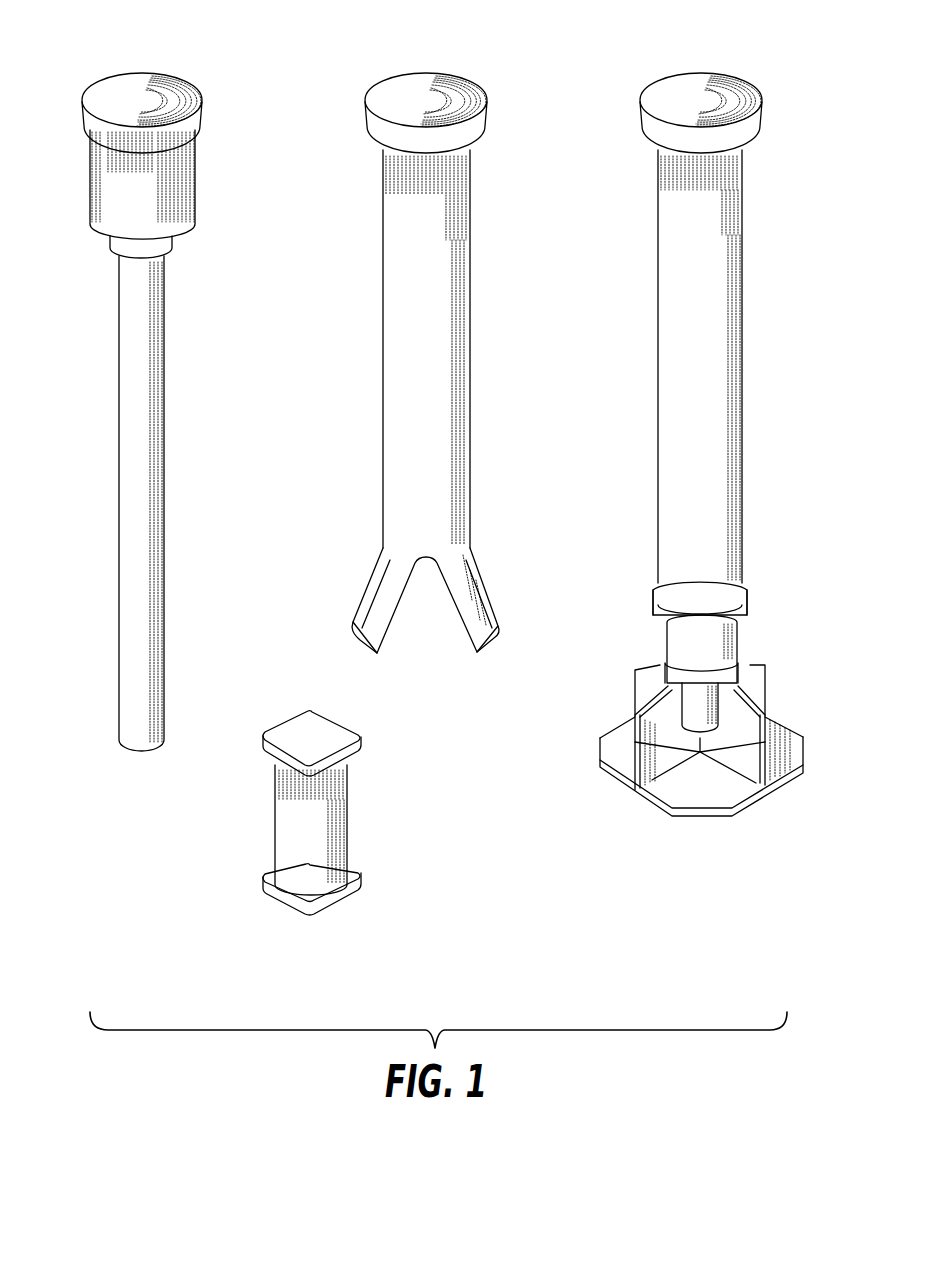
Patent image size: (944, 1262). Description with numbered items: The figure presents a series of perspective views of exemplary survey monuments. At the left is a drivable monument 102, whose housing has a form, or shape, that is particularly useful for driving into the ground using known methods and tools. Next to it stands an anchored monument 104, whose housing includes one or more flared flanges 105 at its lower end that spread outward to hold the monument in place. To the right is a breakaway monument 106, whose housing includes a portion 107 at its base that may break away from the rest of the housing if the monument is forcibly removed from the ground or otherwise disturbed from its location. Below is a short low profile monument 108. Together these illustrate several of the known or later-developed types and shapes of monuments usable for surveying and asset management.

The drivable monument 102 is at (204, 152).
The anchored monument 104 is at (496, 152).
The flared flanges 105 is at (470, 632).
The breakaway monument 106 is at (722, 56).
The breakaway portion 107 is at (775, 728).
The low profile monument 108 is at (381, 818).